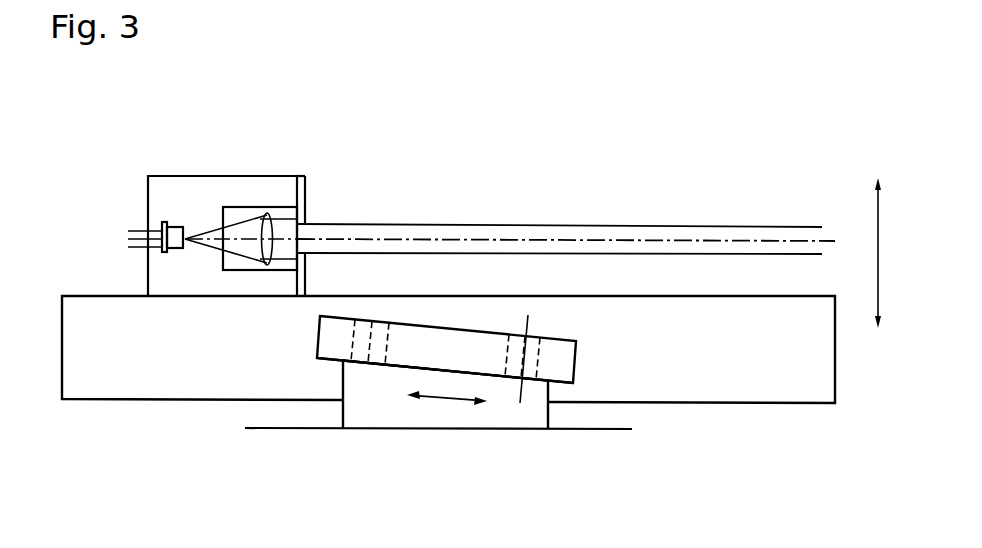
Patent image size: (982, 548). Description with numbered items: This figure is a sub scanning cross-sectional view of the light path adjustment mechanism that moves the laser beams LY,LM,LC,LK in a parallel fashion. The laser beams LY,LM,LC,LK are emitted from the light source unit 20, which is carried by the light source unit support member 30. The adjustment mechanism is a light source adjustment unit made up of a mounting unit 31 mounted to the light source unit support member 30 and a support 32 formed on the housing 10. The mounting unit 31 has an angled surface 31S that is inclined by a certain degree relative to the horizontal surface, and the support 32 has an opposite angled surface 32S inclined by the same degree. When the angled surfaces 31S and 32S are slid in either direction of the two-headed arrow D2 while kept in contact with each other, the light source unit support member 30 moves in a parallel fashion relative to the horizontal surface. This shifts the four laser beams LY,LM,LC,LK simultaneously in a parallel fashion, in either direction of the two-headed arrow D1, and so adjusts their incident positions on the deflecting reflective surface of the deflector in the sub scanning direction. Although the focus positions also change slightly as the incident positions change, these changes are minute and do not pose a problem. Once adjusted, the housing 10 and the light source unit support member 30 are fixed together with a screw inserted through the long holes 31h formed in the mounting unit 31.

The light source unit 20 is at (579, 157).
The laser beams LY,LM,LC,LK is at (678, 227).
The mounting unit 31 is at (452, 350).
The long hole 31h is at (365, 381).
The angled surface 31S is at (492, 376).
The support 32 is at (375, 407).
The angled surface 32S is at (414, 367).
The light source unit support member 30 is at (162, 372).
The housing 10 is at (618, 490).
The two-headed arrow D1 is at (874, 272).
The two-headed arrow D2 is at (445, 400).